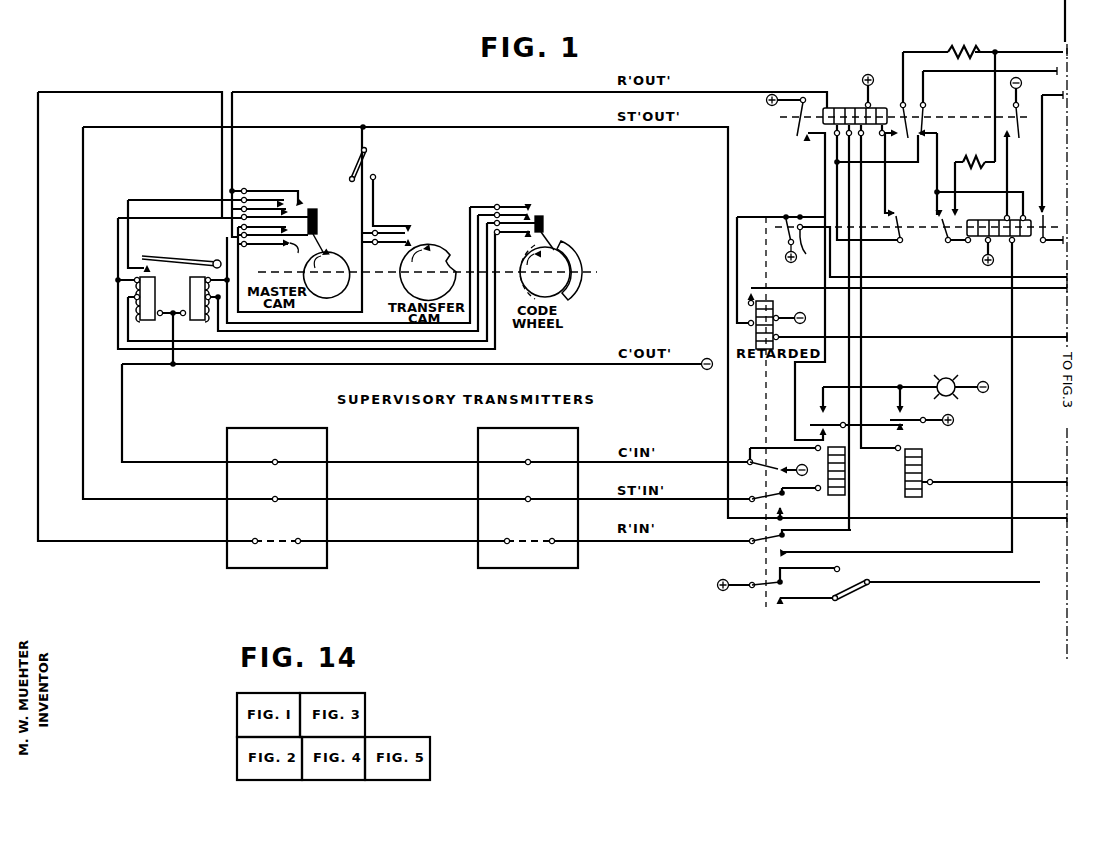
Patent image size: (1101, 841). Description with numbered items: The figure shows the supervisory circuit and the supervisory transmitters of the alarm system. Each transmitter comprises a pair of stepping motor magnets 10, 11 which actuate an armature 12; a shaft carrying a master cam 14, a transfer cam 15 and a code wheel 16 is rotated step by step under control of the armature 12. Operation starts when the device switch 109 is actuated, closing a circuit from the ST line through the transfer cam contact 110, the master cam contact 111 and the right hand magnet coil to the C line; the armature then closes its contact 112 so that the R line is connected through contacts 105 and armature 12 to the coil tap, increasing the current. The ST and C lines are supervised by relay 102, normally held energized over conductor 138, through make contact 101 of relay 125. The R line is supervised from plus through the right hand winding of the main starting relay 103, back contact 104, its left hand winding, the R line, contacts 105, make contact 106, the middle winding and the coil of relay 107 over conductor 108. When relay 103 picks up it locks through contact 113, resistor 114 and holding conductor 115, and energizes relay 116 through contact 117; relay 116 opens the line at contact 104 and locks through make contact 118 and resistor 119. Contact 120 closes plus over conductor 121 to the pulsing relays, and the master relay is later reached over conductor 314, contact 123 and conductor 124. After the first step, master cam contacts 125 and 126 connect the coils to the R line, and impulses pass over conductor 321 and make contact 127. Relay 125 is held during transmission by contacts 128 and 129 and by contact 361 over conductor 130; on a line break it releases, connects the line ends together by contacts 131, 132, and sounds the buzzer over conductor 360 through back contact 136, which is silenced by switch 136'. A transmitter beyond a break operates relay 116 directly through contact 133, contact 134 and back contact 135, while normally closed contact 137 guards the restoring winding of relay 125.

The stepping motor magnet 10 is at (152, 263).
The stepping motor magnet 11 is at (194, 280).
The armature 12 is at (189, 257).
The master cam 14 is at (338, 290).
The transfer cam 15 is at (411, 277).
The code wheel 16 is at (572, 289).
The make contact of relay 125 101 is at (770, 495).
The relay 102 is at (808, 454).
The main starting relay 103 is at (843, 110).
The back contact 104 is at (894, 214).
The contacts of line transmitters 105 is at (298, 206).
The make contact 106 is at (777, 535).
The relay 107 is at (923, 460).
The conductor 108 is at (1040, 482).
The device switch 109 is at (376, 177).
The transfer cam contact 110 is at (411, 230).
The master cam contact 111 is at (318, 224).
The armature contact 112 is at (143, 265).
The contact 113 is at (906, 140).
The resistor 114 is at (962, 50).
The holding conductor 115 is at (1043, 52).
The relay 116 is at (998, 234).
The contact 117 is at (1019, 139).
The make contact 118 is at (950, 205).
The resistor 119 is at (970, 149).
The contact of relay 116 120 is at (807, 272).
The conductor 121 is at (1043, 277).
The contact 123 is at (1045, 222).
The conductor 124 is at (1046, 97).
The adjusting relay 125 is at (785, 306).
The contact 126 is at (317, 212).
The make contact 127 is at (925, 118).
The contact of relay 103 128 is at (789, 129).
The contact of relay 116 129 is at (802, 214).
The conductor 130 is at (1040, 288).
The contact 131 is at (786, 510).
The contact 132 is at (770, 464).
The back contact 133 is at (788, 548).
The contact 134 is at (940, 232).
The back contact 135 is at (932, 137).
The back contact 136 is at (796, 611).
The silencing switch 136' is at (866, 603).
The normally closed contact 137 is at (784, 234).
The conductor 138 is at (1040, 518).
The conductor 314 is at (1043, 243).
The conductor 321 is at (1036, 71).
The conductor 360 is at (1040, 582).
The contact 361 is at (1062, 323).